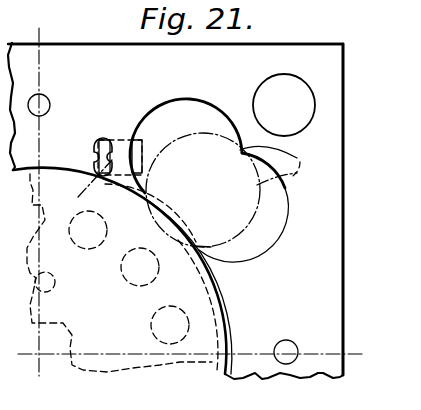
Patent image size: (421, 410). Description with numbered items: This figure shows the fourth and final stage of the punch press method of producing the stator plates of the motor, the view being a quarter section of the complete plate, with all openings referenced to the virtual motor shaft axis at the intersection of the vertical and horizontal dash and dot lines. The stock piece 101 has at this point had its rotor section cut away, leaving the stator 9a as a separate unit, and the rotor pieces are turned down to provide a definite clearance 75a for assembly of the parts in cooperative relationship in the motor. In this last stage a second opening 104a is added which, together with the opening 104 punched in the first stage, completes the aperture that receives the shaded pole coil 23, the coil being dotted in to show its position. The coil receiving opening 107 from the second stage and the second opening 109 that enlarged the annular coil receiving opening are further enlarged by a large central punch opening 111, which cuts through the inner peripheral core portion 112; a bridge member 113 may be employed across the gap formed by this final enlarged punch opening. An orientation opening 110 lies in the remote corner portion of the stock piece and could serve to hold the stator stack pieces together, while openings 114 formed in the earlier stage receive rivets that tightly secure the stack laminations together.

The stator 9a is at (323, 213).
The shaded pole coil 23 is at (82, 183).
The clearance 75a is at (213, 293).
The square stock 101 is at (273, 50).
The opening 104 is at (92, 164).
The second opening 104a is at (96, 136).
The coil receiving opening 107 is at (212, 88).
The second opening 109 is at (272, 245).
The orientation opening 110 is at (305, 82).
The large central punch opening 111 is at (297, 159).
The inner peripheral core portion 112 is at (208, 338).
The bridge member 113 is at (167, 205).
The rivet receiving opening 114 is at (47, 100).